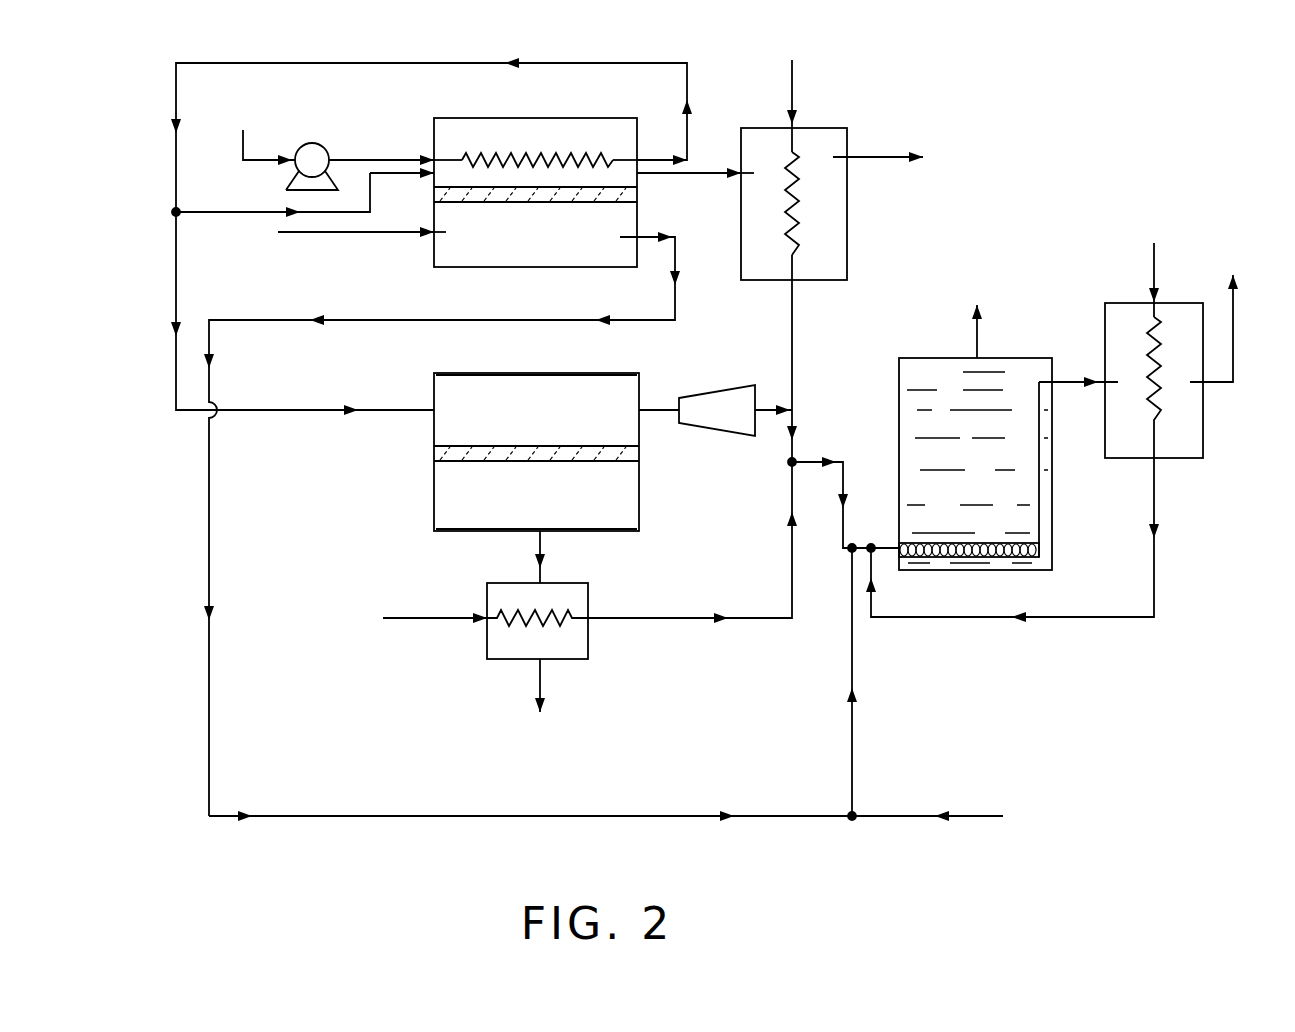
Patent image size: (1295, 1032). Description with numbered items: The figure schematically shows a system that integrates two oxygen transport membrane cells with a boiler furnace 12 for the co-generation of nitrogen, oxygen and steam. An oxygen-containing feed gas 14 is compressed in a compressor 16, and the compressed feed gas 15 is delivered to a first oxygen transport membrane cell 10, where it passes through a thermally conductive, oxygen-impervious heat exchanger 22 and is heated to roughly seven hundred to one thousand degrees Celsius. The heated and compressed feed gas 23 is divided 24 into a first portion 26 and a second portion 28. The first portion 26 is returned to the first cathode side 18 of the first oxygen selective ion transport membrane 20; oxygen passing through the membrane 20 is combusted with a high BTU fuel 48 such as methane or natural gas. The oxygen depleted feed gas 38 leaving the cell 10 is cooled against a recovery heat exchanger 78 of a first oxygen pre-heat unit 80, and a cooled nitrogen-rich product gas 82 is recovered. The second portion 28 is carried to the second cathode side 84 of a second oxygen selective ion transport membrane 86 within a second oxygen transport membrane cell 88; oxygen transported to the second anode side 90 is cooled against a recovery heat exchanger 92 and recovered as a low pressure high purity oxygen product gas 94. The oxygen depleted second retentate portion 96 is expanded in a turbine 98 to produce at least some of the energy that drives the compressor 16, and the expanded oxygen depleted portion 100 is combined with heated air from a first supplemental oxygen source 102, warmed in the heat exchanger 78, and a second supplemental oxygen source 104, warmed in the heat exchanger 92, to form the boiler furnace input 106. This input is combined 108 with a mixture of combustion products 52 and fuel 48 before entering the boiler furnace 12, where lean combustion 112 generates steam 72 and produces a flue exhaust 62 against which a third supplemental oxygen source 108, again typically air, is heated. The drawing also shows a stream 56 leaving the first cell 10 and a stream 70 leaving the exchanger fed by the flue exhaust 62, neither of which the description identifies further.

The first oxygen transport membrane cell 10 is at (555, 106).
The boiler furnace 12 is at (898, 438).
The oxygen-containing feed gas 14 is at (246, 135).
The compressed feed gas 15 is at (376, 158).
The compressor 16 is at (316, 152).
The first cathode side 18 is at (436, 190).
The first oxygen selective ion transport membrane 20 is at (638, 193).
The heat exchanger 22 is at (580, 152).
The heated and compressed oxygen-containing feed gas 23 is at (408, 64).
The division point 24 is at (178, 215).
The first portion 26 is at (238, 211).
The second portion 28 is at (180, 270).
The oxygen depleted feed gas 38 is at (710, 175).
The high BTU fuel 48 is at (322, 236).
The combustion products 52 is at (550, 818).
The permeate outlet line 56 is at (677, 255).
The flue exhaust 62 is at (1070, 380).
The heat exchanger outlet 70 is at (1235, 322).
The steam 72 is at (978, 328).
The recovery heat exchanger 78 is at (800, 228).
The first oxygen pre-heat unit 80 is at (826, 138).
The cooled nitrogen-rich product gas 82 is at (882, 158).
The second cathode side 84 is at (632, 428).
The second oxygen selective ion transport membrane 86 is at (636, 456).
The second oxygen transport membrane cell 88 is at (505, 368).
The second anode side 90 is at (636, 492).
The recovery heat exchanger 92 is at (568, 612).
The high purity oxygen product gas 94 is at (542, 682).
The oxygen depleted second retentate portion 96 is at (658, 408).
The turbine 98 is at (733, 400).
The expanded oxygen depleted portion 100 is at (764, 412).
The first supplemental oxygen source 102 is at (795, 85).
The second supplemental oxygen source 104 is at (420, 622).
The boiler furnace input 106 is at (845, 492).
The third supplemental oxygen source 108 is at (853, 547).
The lean combustion 112 is at (988, 558).